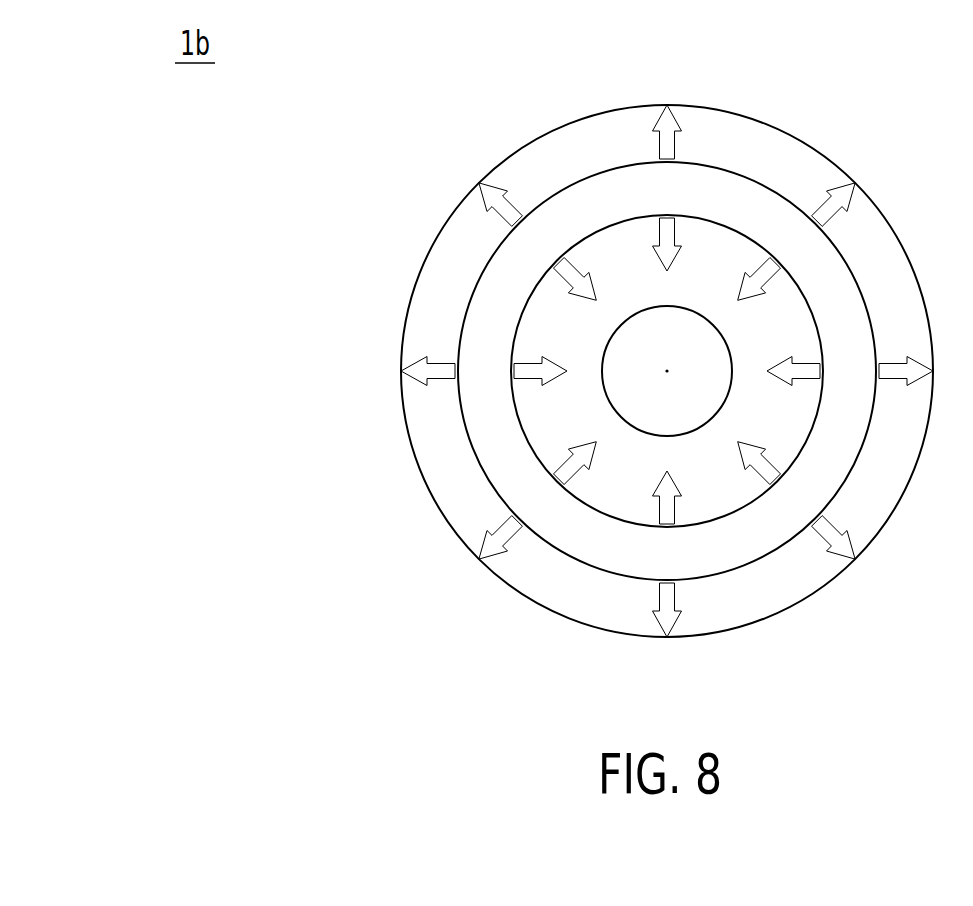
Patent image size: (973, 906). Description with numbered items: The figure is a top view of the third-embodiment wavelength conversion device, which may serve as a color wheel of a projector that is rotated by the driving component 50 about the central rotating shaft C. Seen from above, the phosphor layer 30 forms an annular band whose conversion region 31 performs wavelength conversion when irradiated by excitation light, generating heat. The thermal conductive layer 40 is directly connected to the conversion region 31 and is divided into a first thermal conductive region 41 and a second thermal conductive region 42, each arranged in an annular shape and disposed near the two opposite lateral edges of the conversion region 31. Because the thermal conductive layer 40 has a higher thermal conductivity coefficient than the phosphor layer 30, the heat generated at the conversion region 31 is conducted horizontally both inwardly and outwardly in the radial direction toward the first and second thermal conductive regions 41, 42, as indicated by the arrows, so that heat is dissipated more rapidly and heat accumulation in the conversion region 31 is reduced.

The phosphor layer 30 is at (591, 218).
The conversion region 31 is at (637, 182).
The thermal conductive layer 40 is at (717, 258).
The first thermal conductive region 41 is at (740, 312).
The second thermal conductive region 42 is at (472, 237).
The driving component 50 is at (617, 393).
The rotating shaft C is at (667, 371).